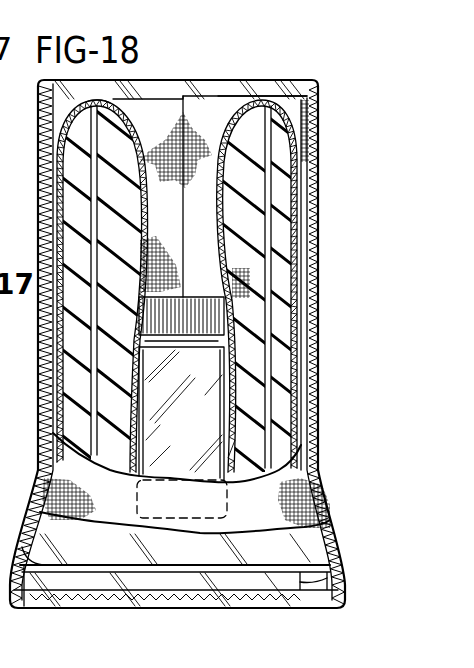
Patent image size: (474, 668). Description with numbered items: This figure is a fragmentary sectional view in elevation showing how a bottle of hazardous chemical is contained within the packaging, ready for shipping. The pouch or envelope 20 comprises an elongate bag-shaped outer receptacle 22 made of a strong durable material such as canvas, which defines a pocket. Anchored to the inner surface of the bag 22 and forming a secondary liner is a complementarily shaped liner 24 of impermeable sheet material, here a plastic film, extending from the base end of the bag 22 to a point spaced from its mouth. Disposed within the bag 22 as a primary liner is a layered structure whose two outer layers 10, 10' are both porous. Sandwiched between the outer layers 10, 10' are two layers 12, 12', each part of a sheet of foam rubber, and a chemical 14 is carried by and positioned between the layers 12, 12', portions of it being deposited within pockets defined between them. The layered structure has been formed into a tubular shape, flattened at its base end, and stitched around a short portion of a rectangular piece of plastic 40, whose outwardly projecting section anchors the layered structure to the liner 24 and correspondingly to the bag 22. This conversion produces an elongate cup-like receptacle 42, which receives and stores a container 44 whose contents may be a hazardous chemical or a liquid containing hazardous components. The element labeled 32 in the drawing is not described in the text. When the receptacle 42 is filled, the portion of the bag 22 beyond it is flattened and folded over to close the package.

The pouch or envelope 20 is at (333, 154).
The liner 24 is at (296, 84).
The bag-shaped outer receptacle 22 is at (319, 370).
The outer layer 10 is at (175, 286).
The outer layer 10' is at (131, 76).
The layer 12 is at (178, 293).
The layer 12' is at (190, 320).
The chemical 14 is at (92, 189).
The center seam 32 is at (215, 99).
The cup-like receptacle 42 is at (240, 100).
The container 44 is at (197, 394).
The rectangular piece of plastic 40 is at (337, 578).